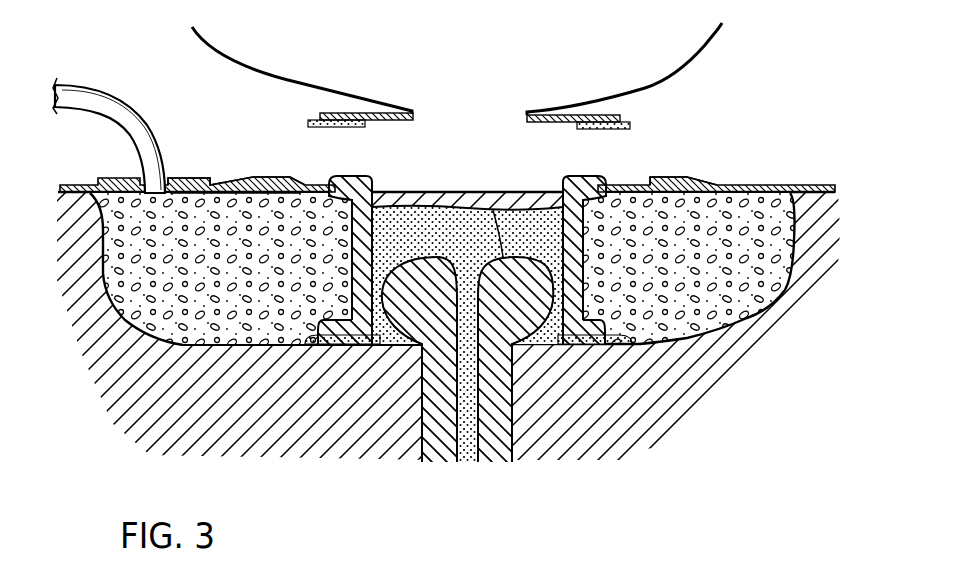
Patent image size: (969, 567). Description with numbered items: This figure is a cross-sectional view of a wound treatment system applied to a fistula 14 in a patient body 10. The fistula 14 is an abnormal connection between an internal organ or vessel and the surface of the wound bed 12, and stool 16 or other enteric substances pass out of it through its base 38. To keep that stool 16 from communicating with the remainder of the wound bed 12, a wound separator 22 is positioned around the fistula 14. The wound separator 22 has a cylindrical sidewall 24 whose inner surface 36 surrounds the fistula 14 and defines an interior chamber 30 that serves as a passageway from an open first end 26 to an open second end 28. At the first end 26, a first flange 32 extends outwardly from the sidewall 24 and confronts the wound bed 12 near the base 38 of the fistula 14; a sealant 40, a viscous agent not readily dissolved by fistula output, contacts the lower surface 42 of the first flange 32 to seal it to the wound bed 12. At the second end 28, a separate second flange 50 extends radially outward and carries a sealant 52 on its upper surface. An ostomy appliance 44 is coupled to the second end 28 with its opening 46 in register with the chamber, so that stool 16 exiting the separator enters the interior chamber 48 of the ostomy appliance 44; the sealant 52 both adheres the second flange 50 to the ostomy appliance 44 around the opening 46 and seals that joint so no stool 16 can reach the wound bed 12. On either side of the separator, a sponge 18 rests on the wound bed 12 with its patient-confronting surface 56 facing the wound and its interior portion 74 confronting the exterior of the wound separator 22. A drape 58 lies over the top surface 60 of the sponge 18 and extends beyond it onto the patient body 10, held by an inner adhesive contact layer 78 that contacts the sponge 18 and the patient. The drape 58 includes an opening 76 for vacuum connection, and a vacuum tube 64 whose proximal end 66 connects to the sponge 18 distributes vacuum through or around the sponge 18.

The patient body 10 is at (108, 370).
The wound bed 12 is at (256, 303).
The fistula 14 is at (493, 210).
The stool 16 is at (433, 207).
The sponge 18 is at (709, 320).
The wound separator 22 is at (350, 270).
The sidewall 24 is at (653, 287).
The first end 26 is at (545, 348).
The second end 28 is at (565, 178).
The interior chamber 30 is at (467, 317).
The first flange 32 is at (350, 347).
The inner surface 36 is at (385, 206).
The base 38 is at (520, 348).
The sealant 40 is at (313, 347).
The lower surface 42 is at (607, 346).
The ostomy appliance 44 is at (720, 85).
The opening 46 is at (470, 114).
The interior chamber 48 is at (302, 70).
The second flange 50 is at (320, 180).
The sealant 52 is at (365, 128).
The patient-confronting surface 56 is at (237, 347).
The drape 58 is at (75, 188).
The top surface 60 is at (614, 180).
The vacuum tube 64 is at (147, 122).
The proximal end 66 is at (157, 185).
The interior portion 74 is at (380, 245).
The opening 76 is at (125, 197).
The adhesive contact layer 78 is at (228, 198).